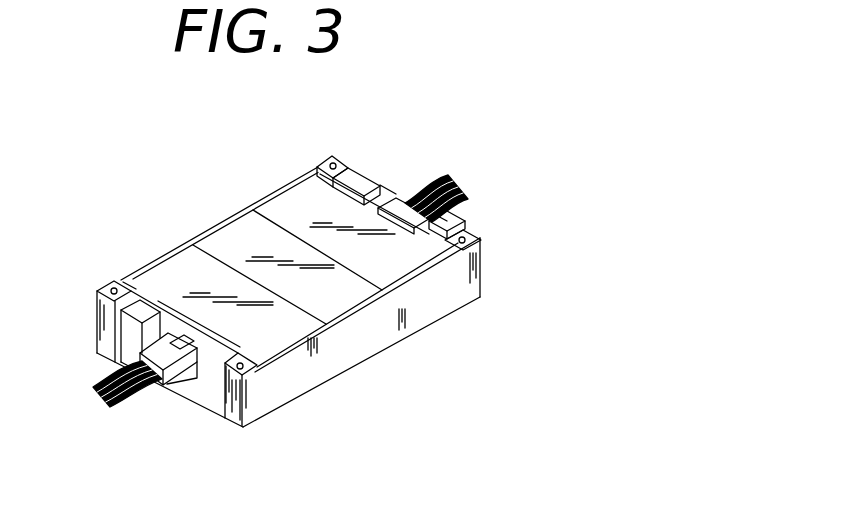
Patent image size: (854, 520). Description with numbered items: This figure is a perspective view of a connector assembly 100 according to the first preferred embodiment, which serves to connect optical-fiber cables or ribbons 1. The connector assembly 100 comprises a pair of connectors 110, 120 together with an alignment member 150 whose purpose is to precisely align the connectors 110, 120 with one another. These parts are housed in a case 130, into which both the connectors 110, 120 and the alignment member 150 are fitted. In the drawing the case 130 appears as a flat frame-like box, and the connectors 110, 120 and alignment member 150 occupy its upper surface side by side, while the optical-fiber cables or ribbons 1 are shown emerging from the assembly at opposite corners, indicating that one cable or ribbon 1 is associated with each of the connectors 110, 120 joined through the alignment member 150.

The connector assembly 100 is at (98, 138).
The connector 110 is at (172, 277).
The alignment member 150 is at (233, 234).
The connector 120 is at (297, 191).
The case 130 is at (333, 342).
The optical-fiber cables or ribbons 1 is at (124, 392).